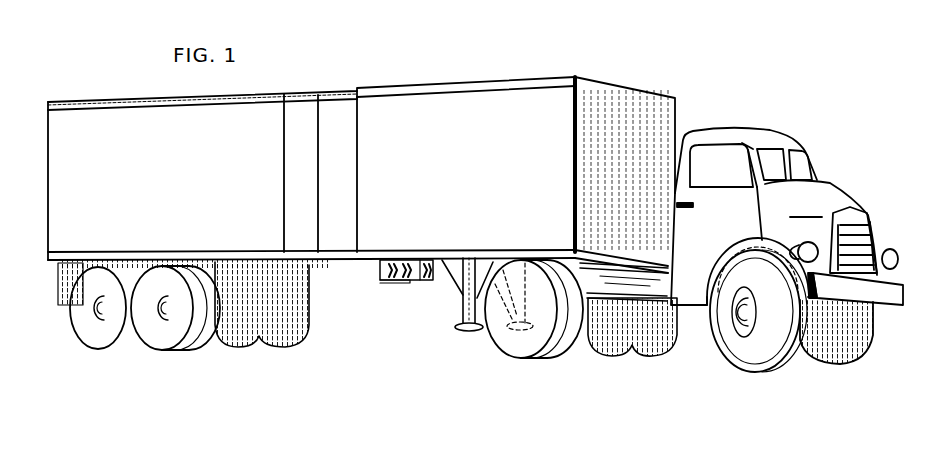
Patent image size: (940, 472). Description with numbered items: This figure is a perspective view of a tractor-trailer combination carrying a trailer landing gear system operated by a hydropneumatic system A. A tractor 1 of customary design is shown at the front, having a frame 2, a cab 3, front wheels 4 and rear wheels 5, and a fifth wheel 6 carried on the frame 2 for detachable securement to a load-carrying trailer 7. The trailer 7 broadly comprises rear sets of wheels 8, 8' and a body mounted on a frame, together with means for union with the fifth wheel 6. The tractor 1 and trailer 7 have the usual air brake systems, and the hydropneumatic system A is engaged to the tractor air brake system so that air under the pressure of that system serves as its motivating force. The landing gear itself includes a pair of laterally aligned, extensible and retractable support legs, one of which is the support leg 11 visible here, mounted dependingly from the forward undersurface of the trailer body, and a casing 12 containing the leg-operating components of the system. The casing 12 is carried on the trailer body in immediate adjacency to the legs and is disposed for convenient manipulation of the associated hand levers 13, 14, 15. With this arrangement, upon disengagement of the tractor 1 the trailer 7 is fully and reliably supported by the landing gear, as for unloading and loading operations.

The tractor 1 is at (737, 130).
The frame 2 is at (653, 356).
The cab 3 is at (810, 162).
The front wheels 4 is at (747, 360).
The rear wheels 5 is at (523, 353).
The fifth wheel 6 is at (588, 352).
The trailer 7 is at (451, 103).
The rear set of wheels 8 is at (220, 325).
The rear set of wheels 8' is at (98, 324).
The support leg 11 is at (463, 328).
The casing 12 is at (383, 282).
The hand lever 13 is at (402, 280).
The hand lever 14 is at (387, 280).
The hand lever 15 is at (428, 282).
The hydropneumatic system A is at (422, 300).